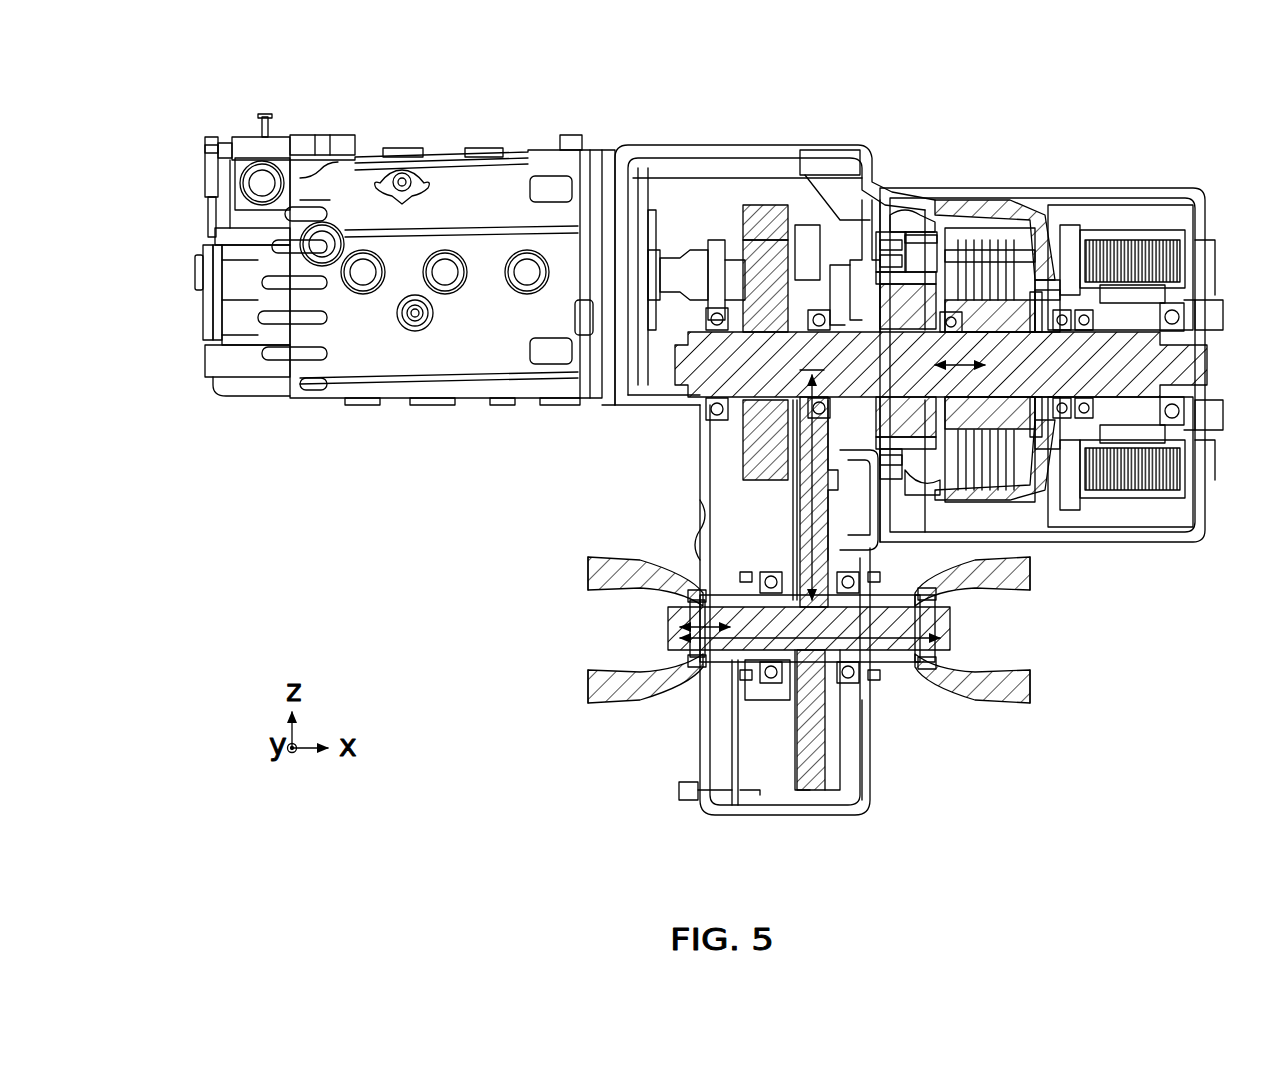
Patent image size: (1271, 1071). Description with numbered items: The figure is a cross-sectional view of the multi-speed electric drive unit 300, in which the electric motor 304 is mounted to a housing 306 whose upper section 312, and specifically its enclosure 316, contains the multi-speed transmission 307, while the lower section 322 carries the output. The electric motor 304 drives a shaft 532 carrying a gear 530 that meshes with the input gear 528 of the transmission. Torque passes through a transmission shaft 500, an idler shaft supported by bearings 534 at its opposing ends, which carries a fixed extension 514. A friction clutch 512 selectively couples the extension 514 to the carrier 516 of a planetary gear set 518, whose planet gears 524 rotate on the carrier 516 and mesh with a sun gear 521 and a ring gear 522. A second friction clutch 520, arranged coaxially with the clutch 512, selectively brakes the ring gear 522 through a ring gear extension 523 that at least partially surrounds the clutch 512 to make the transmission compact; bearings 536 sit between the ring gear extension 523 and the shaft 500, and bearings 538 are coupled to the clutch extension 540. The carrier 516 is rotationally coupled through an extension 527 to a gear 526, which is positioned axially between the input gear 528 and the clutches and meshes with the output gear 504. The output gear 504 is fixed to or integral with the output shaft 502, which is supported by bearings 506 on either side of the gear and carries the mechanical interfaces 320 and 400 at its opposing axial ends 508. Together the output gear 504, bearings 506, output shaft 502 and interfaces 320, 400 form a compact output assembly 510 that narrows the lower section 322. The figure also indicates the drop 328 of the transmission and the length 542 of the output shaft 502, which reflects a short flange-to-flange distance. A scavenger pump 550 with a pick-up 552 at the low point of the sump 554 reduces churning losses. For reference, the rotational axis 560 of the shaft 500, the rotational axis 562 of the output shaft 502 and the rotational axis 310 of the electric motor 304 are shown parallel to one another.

The multi-speed electric drive unit 300 is at (296, 98).
The electric motor 304 is at (406, 124).
The housing 306 is at (648, 112).
The multi-speed transmission 307 is at (1152, 213).
The rotational axis of the electric motor 310 is at (245, 273).
The upper section of the housing 312 is at (698, 138).
The enclosure 316 is at (1083, 188).
The mechanical interface 320 is at (568, 602).
The lower section of the housing 322 is at (752, 832).
The drop 328 is at (812, 540).
The mechanical interface 400 is at (1030, 597).
The transmission shaft 500 is at (884, 371).
The output shaft 502 is at (794, 626).
The output gear 504 is at (800, 487).
The bearings 506 is at (762, 680).
The axial ends of the output shaft 508 is at (640, 628).
The output assembly 510 is at (636, 728).
The clutch 512 is at (998, 238).
The extension 514 is at (1032, 297).
The carrier 516 is at (880, 240).
The planetary gear set 518 is at (858, 208).
The clutch 520 is at (1162, 234).
The sun gear 521 is at (940, 440).
The ring gear 522 is at (905, 218).
The ring gear extension 523 is at (1000, 205).
The planet gears 524 is at (918, 226).
The gear 526 is at (797, 447).
The extension 527 is at (800, 497).
The input gear 528 is at (772, 258).
The gear 530 is at (765, 258).
The shaft 532 is at (684, 262).
The bearings 534 is at (705, 408).
The bearings 536 is at (1040, 470).
The bearings 538 is at (975, 470).
The clutch extension 540 is at (947, 236).
The length of the output shaft 542 is at (873, 640).
The scavenger pump 550 is at (685, 802).
The pick-up 552 is at (714, 795).
The sump 554 is at (780, 802).
The rotational axis of the shaft 560 is at (985, 440).
The rotational axis of the shaft 562 is at (712, 596).